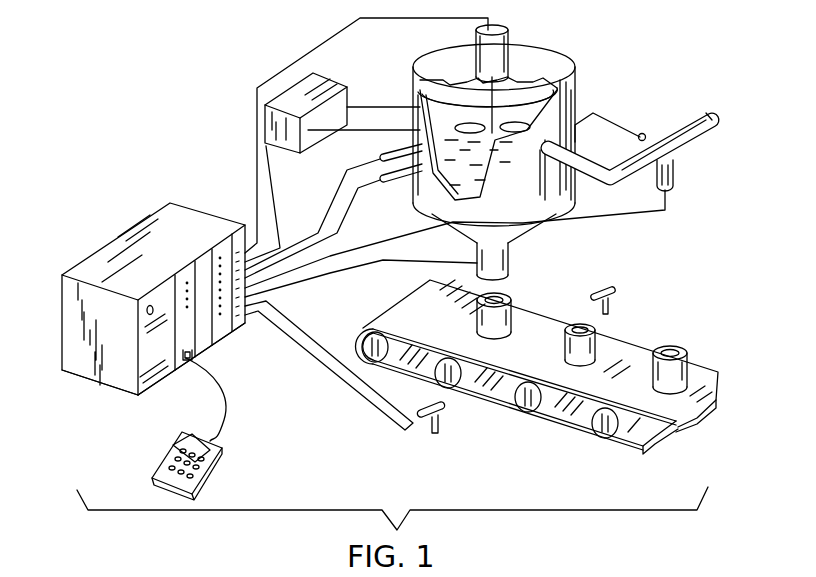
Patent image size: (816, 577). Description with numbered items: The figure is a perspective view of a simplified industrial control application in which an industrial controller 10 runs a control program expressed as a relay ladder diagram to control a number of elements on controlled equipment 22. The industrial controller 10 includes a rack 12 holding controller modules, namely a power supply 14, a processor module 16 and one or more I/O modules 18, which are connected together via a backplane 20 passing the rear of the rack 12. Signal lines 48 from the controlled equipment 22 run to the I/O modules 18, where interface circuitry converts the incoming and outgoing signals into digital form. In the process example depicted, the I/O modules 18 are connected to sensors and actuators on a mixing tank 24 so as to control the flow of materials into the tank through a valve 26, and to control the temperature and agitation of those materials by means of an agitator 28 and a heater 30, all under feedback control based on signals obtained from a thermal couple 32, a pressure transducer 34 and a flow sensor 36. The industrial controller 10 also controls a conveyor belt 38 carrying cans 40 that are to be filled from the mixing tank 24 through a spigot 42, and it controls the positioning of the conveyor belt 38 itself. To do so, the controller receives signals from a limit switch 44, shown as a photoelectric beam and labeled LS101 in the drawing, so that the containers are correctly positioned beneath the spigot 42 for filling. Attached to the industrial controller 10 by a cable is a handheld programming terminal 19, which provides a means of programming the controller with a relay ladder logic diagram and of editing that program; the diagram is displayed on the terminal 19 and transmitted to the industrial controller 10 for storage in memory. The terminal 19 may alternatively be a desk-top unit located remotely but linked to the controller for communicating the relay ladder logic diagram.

The industrial controller 10 is at (145, 216).
The rack 12 is at (122, 238).
The power supply 14 is at (163, 380).
The processor module 16 is at (187, 360).
The I/O modules 18 is at (237, 333).
The programming terminal 19 is at (160, 461).
The backplane 20 is at (54, 334).
The controlled equipment 22 is at (660, 68).
The mixing tank 24 is at (573, 102).
The valve 26 is at (673, 177).
The agitator 28 is at (507, 62).
The heater 30 is at (386, 107).
The thermal couple 32 is at (382, 154).
The pressure transducer 34 is at (396, 183).
The flow sensor 36 is at (642, 133).
The conveyor belt 38 is at (707, 370).
The cans 40 is at (597, 340).
The spigot 42 is at (510, 268).
The limit switch 44 is at (613, 295).
The signal lines 48 is at (368, 274).
The limit switch LS101 is at (417, 437).